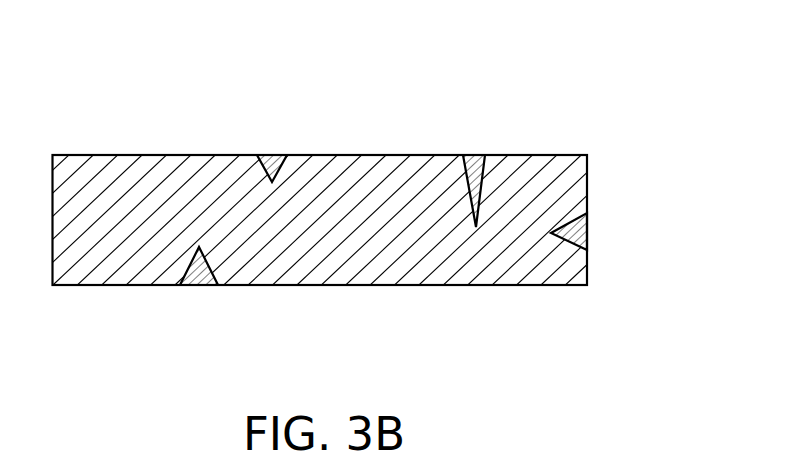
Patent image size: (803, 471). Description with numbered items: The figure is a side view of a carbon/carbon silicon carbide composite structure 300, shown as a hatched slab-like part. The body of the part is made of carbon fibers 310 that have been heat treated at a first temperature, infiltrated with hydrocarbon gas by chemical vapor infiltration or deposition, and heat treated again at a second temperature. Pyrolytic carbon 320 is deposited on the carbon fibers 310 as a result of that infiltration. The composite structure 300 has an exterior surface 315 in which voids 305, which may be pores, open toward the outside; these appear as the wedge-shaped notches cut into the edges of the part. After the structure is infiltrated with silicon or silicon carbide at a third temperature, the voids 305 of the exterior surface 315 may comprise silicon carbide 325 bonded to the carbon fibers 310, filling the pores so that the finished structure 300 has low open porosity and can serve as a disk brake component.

The carbon/carbon silicon carbide composite structure 300 is at (592, 118).
The voids 305 is at (274, 140).
The carbon fibers 310 is at (102, 197).
The exterior surface 315 is at (168, 156).
The pyrolytic carbon 320 is at (477, 158).
The silicon carbide 325 is at (203, 265).